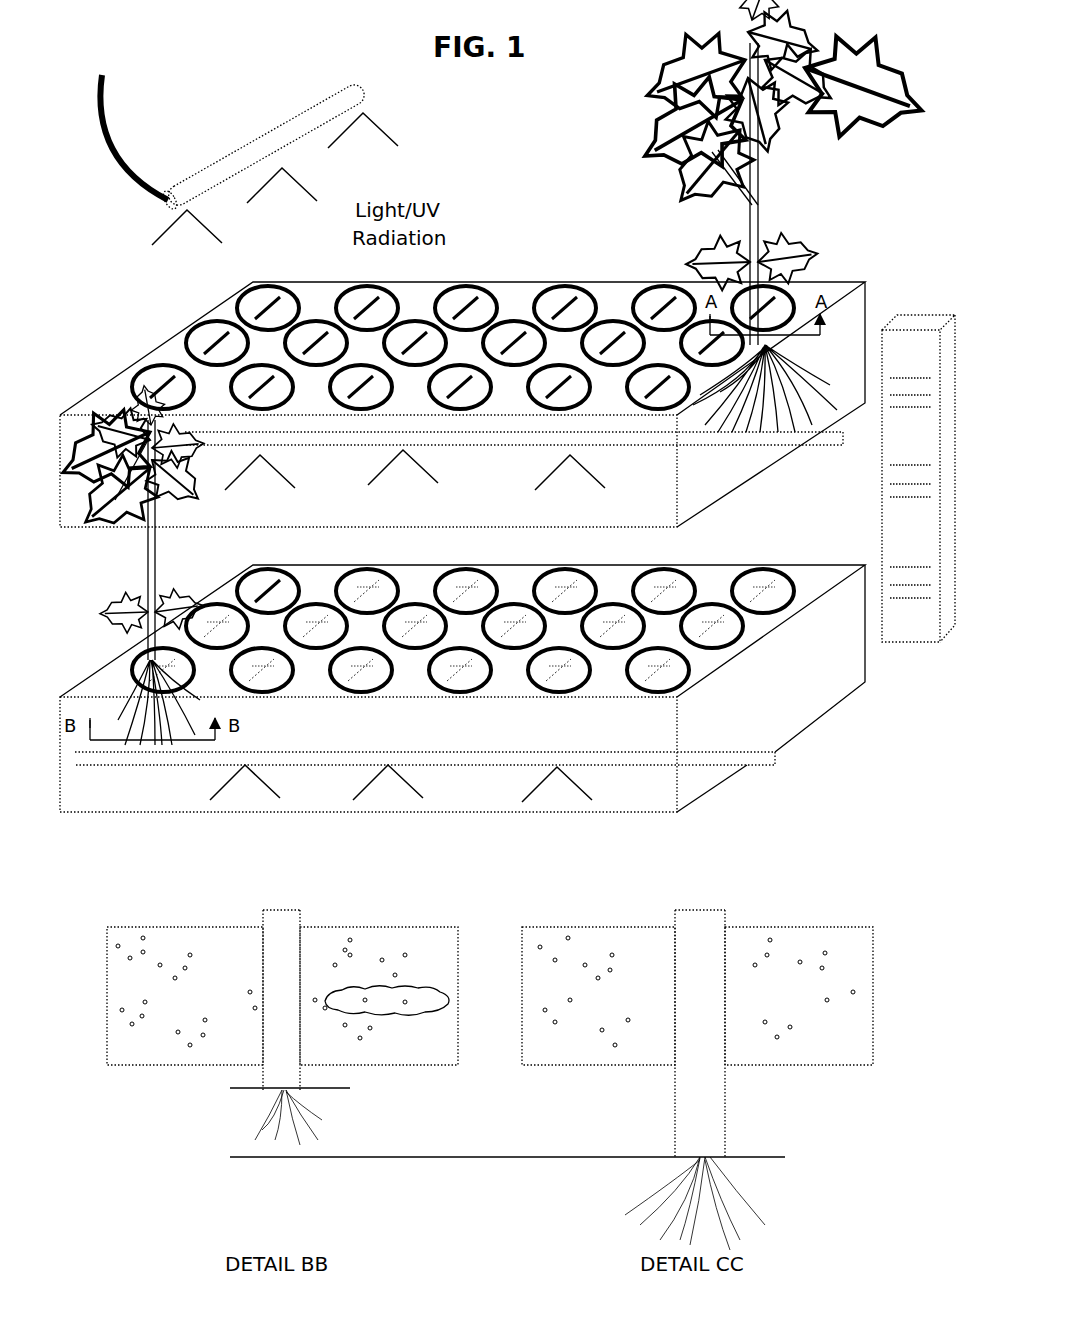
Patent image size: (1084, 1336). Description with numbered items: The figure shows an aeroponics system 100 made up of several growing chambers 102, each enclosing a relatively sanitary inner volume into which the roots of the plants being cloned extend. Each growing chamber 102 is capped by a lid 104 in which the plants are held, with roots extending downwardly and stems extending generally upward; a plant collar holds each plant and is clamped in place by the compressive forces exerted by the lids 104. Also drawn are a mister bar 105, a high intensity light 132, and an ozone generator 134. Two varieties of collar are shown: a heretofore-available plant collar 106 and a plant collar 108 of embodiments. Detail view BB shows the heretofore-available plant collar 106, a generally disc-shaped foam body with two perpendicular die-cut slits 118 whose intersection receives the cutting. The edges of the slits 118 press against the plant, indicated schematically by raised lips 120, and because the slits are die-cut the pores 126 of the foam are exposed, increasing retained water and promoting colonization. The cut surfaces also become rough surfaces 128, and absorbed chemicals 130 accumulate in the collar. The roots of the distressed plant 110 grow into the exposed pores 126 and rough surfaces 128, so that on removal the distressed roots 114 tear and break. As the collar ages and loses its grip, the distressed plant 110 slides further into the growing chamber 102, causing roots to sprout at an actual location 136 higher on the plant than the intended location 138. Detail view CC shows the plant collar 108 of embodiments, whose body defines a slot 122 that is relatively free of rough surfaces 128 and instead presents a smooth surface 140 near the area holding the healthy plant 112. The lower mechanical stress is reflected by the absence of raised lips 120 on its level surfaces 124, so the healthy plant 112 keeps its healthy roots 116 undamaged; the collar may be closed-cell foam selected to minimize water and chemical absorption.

The aeroponics system 100 is at (183, 44).
The growing chamber 102 is at (865, 282).
The lid 104 is at (340, 282).
The mister bar 105 is at (290, 462).
The heretofore-available plant collar 106 is at (216, 322).
The plant collar 108 is at (755, 345).
The distressed plant 110 is at (826, 55).
The healthy plant 112 is at (145, 612).
The distressed roots 114 is at (128, 693).
The healthy roots 116 is at (720, 440).
The slit 118 is at (195, 344).
The raised lip 120 is at (301, 920).
The slot 122 is at (565, 300).
The level surface 124 is at (672, 927).
The pore 126 is at (252, 982).
The rough surface 128 is at (262, 972).
The absorbed chemical 130 is at (424, 985).
The high intensity light 132 is at (305, 105).
The ozone generator 134 is at (160, 358).
The actual location 136 is at (340, 1100).
The intended location 138 is at (459, 1169).
The smooth surface 140 is at (677, 973).